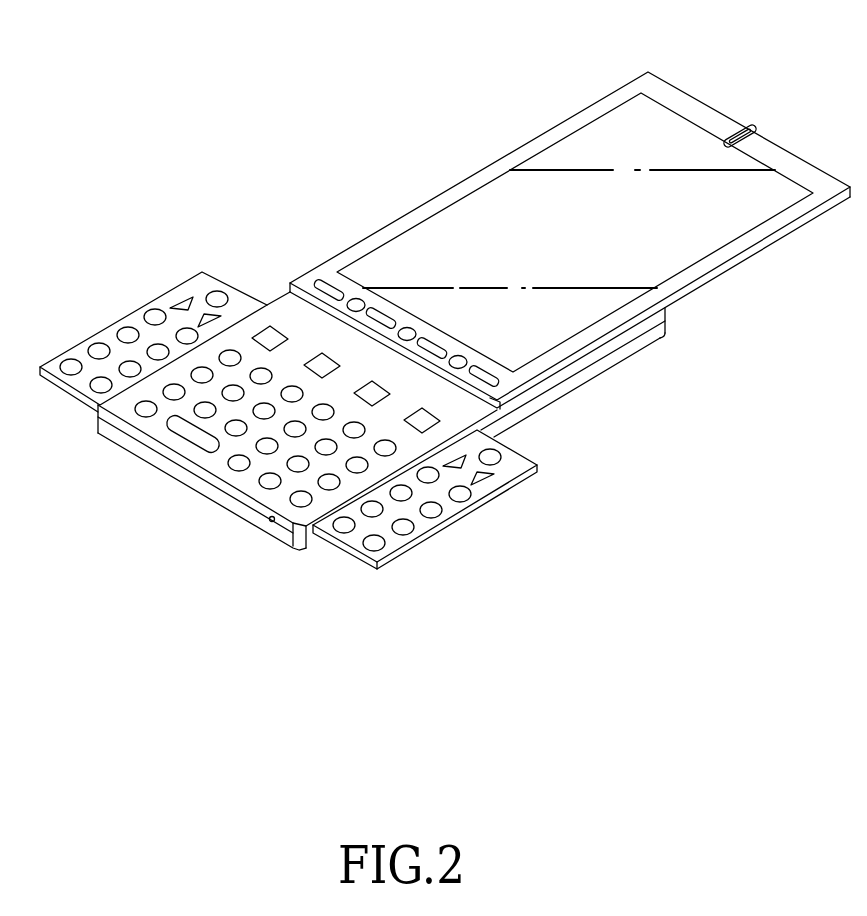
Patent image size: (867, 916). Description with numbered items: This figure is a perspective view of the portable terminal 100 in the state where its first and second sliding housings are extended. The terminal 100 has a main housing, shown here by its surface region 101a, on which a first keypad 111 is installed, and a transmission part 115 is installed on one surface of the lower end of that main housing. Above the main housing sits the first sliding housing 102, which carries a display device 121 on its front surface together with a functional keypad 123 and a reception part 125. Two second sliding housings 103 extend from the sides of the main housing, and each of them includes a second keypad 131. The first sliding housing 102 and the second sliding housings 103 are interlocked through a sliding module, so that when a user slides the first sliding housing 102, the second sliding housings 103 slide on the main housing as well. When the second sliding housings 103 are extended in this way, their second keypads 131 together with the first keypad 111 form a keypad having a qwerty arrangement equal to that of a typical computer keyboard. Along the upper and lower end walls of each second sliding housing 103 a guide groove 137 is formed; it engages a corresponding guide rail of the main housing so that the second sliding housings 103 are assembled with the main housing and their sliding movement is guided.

The portable terminal 100 is at (281, 55).
The main body housing 101a is at (130, 466).
The first sliding housing 102 is at (550, 96).
The second sliding housings 103 is at (87, 321).
The first keypad 111 is at (236, 462).
The transmission part 115 is at (272, 522).
The display device 121 is at (457, 222).
The functional keypad 123 is at (320, 283).
The reception part 125 is at (742, 140).
The second keypads 131 is at (153, 316).
The guide groove 137 is at (74, 394).